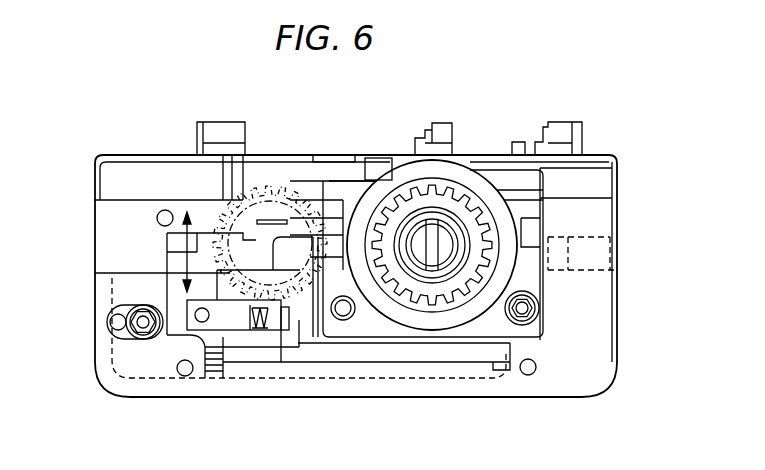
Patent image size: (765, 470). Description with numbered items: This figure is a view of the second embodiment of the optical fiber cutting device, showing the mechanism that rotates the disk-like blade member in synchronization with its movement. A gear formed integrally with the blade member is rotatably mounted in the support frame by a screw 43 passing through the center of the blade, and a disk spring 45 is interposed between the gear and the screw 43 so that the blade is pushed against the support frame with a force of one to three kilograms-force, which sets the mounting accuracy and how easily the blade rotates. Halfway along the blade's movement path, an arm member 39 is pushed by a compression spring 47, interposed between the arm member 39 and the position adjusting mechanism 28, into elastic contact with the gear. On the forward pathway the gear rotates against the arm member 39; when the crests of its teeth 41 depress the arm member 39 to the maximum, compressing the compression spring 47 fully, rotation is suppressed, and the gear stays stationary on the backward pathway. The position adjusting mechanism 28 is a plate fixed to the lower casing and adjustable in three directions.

The position adjusting mechanism 28 is at (146, 363).
The arm member 39 is at (237, 320).
The teeth 41 is at (487, 214).
The screw 43 is at (377, 223).
The disk spring 45 is at (422, 240).
The compression spring 47 is at (262, 323).